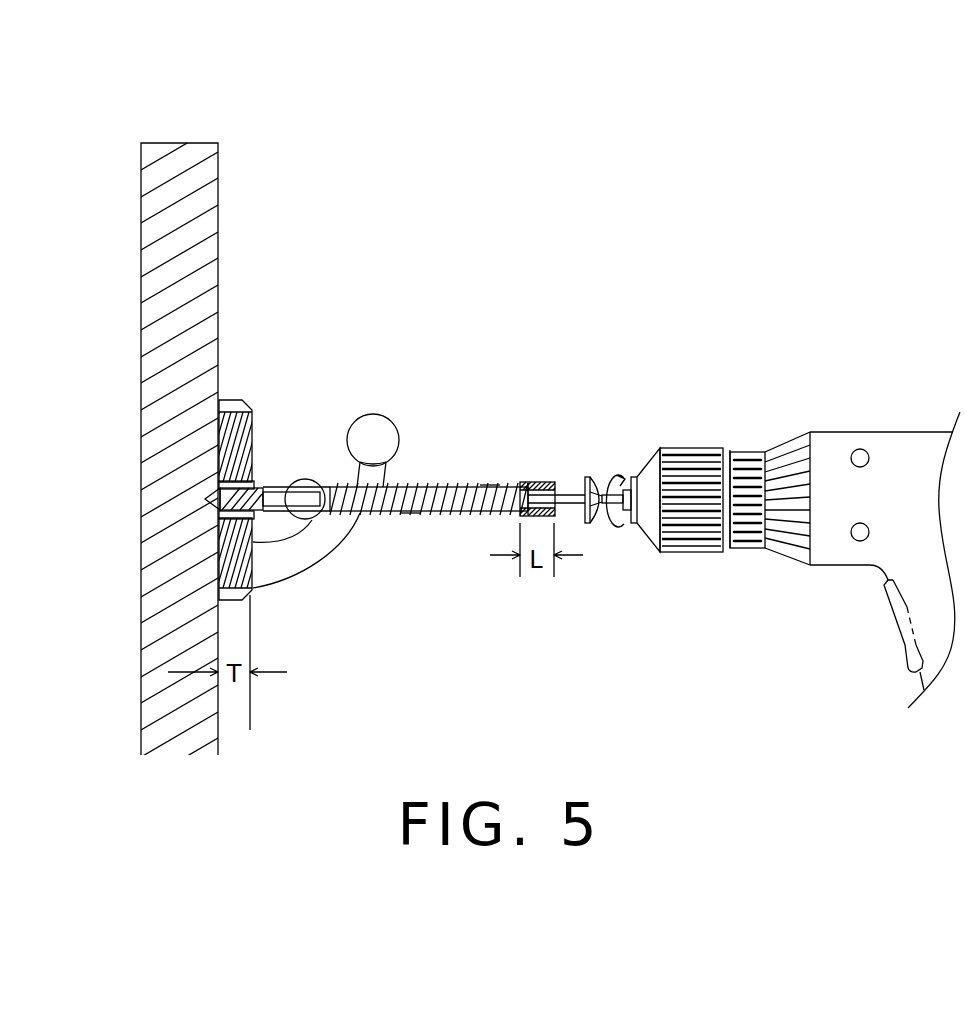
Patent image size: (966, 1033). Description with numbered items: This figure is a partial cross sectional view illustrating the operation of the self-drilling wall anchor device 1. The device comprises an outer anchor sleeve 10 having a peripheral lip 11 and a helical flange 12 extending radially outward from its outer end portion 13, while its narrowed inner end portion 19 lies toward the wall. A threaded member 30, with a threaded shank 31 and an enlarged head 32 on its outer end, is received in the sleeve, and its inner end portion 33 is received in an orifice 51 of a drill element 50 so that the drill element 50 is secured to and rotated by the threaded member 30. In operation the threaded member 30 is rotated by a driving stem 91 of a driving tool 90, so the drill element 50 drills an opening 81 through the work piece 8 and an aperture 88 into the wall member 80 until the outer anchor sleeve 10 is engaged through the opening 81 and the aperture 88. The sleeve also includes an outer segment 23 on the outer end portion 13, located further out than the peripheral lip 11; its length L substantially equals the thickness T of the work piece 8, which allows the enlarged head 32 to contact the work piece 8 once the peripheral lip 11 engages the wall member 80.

The self-drilling wall anchor device 1 is at (324, 470).
The work piece 8 is at (251, 452).
The outer anchor sleeve 10 is at (338, 470).
The peripheral lip 11 is at (518, 480).
The helical flange 12 is at (492, 482).
The outer end portion 13 is at (512, 465).
The inner end portion 19 is at (323, 528).
The outer segment 23 is at (543, 480).
The threaded member 30 is at (447, 503).
The threaded shank 31 is at (413, 512).
The enlarged head 32 is at (590, 477).
The inner end portion 33 is at (280, 487).
The drill element 50 is at (207, 500).
The orifice 51 is at (273, 504).
The wall member 80 is at (174, 150).
The opening 81 is at (257, 484).
The aperture 88 is at (207, 492).
The driving tool 90 is at (727, 453).
The driving stem 91 is at (612, 527).